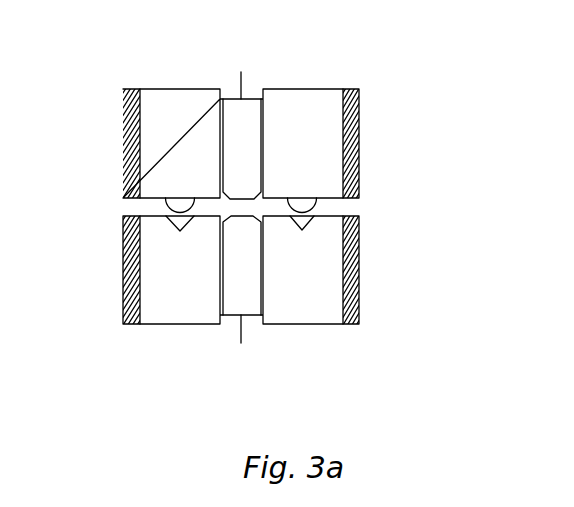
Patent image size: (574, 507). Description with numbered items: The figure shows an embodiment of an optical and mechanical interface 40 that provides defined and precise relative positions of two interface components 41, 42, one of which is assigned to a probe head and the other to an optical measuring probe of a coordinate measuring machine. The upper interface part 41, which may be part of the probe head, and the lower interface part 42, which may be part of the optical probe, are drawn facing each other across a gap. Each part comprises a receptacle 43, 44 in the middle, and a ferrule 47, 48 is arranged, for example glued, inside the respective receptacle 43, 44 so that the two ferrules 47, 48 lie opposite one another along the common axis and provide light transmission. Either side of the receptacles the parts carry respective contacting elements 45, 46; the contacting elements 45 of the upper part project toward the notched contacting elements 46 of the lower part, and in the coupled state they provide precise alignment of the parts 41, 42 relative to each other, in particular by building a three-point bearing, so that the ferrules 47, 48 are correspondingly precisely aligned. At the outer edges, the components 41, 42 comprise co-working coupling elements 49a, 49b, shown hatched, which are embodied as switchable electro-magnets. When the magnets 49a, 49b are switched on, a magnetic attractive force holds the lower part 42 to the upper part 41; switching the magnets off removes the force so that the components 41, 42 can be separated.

The optical and mechanical interface 40 is at (462, 172).
The interface component 41 is at (368, 43).
The interface component 42 is at (395, 348).
The receptacle 43 is at (227, 73).
The receptacle 44 is at (228, 330).
The contacting element 45 is at (177, 202).
The contacting element 46 is at (178, 218).
The ferrule 47 is at (251, 118).
The ferrule 48 is at (245, 290).
The coupling element 49a is at (129, 117).
The coupling element 49b is at (137, 282).